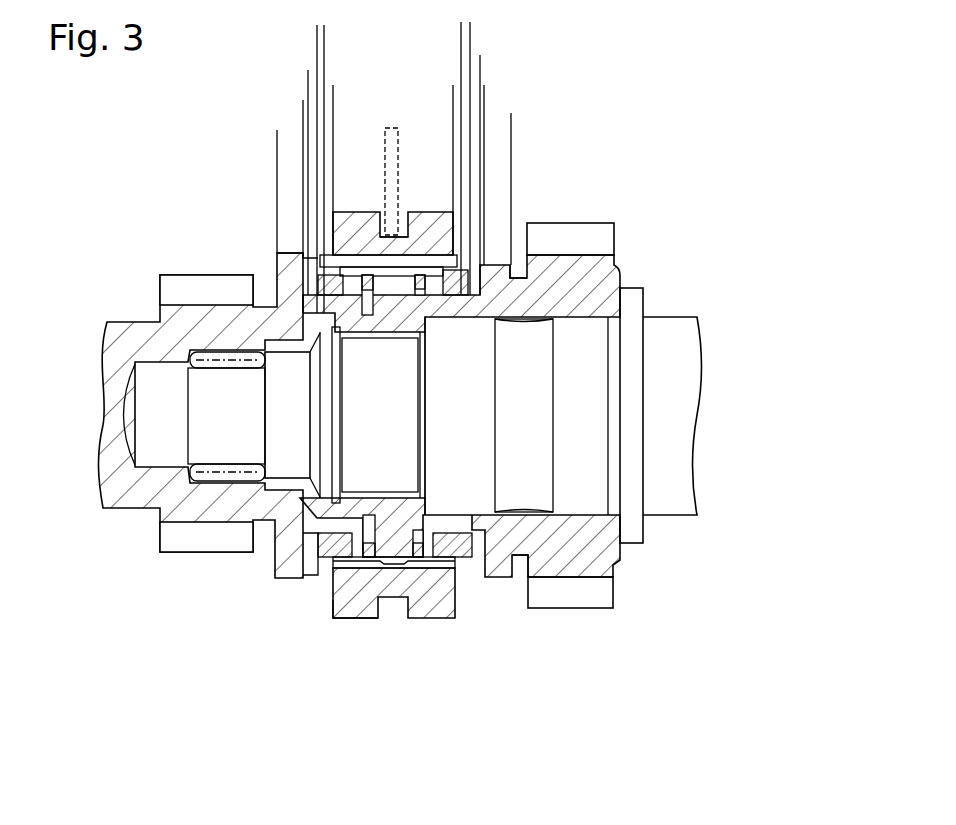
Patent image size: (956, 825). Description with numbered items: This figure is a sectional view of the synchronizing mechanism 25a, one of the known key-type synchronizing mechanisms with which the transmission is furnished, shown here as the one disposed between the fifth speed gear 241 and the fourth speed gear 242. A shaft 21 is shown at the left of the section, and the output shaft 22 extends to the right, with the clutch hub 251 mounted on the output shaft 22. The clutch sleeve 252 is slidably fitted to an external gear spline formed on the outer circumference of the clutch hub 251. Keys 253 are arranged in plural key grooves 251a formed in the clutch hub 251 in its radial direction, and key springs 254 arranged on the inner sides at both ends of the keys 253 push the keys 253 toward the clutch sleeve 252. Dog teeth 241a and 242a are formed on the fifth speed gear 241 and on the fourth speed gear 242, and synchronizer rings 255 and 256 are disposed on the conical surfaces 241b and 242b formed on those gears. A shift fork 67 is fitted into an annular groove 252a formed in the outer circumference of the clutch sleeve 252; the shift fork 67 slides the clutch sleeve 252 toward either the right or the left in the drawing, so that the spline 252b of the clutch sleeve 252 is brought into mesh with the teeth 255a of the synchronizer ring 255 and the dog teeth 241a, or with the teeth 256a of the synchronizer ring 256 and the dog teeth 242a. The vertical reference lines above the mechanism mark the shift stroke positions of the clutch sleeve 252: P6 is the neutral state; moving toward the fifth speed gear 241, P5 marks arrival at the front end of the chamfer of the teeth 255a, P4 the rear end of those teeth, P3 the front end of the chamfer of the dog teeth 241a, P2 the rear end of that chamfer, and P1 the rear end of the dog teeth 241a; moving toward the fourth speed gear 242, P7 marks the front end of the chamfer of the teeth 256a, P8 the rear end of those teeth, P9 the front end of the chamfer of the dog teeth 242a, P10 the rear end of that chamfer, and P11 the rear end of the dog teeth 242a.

The input shaft 21 is at (115, 347).
The output shaft 22 is at (687, 365).
The fifth speed gear 241 is at (177, 283).
The dog teeth 241a is at (277, 255).
The conical surface 241b is at (320, 533).
The fourth speed gear 242 is at (585, 233).
The dog teeth 242a is at (520, 210).
The conical surface 242b is at (505, 565).
The clutch hub 251 is at (407, 596).
The key grooves 251a is at (430, 210).
The clutch sleeve 252 is at (358, 222).
The annular groove 252a is at (400, 210).
The spline 252b is at (342, 618).
The keys 253 is at (370, 283).
The key springs 254 is at (372, 580).
The synchronizer ring 255 is at (330, 572).
The teeth 255a is at (322, 578).
The synchronizer ring 256 is at (463, 585).
The teeth 256a is at (467, 582).
The synchronizing mechanism 25a is at (413, 197).
The shift fork 67 is at (383, 128).
The shift stroke position P1 is at (282, 180).
The shift stroke position P2 is at (297, 167).
The shift stroke position P3 is at (302, 168).
The shift stroke position P4 is at (309, 157).
The shift stroke position P5 is at (337, 157).
The shift stroke position P6 is at (397, 155).
The shift stroke position P7 is at (454, 147).
The shift stroke position P8 is at (482, 147).
The shift stroke position P9 is at (489, 159).
The shift stroke position P10 is at (506, 162).
The shift stroke position P11 is at (521, 176).